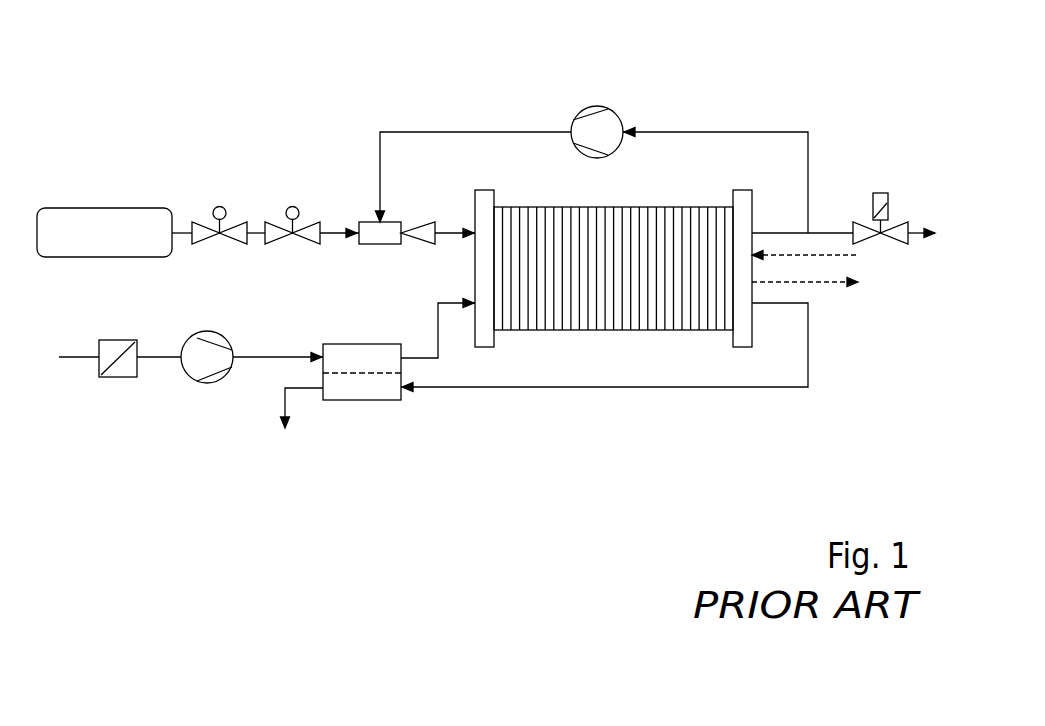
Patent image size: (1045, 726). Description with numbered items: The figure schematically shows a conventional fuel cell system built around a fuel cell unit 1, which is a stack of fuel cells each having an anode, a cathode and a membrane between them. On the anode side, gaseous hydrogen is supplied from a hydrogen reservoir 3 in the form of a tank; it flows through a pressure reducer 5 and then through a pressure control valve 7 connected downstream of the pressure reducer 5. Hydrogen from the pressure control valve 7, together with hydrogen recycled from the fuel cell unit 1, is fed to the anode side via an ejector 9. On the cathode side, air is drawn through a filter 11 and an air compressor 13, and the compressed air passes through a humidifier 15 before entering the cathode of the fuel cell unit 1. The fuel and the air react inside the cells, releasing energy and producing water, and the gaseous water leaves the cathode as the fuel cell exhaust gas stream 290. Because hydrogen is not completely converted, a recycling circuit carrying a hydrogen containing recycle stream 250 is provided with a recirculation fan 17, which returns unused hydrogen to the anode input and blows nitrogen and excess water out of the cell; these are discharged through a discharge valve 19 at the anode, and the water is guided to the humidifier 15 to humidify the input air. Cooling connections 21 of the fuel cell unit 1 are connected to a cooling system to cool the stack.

The fuel cell unit 1 is at (503, 207).
The hydrogen reservoir 3 is at (106, 208).
The pressure reducer 5 is at (232, 222).
The pressure control valve 7 is at (307, 222).
The ejector 9 is at (362, 221).
The filter 11 is at (120, 378).
The air compressor 13 is at (214, 383).
The humidifier 15 is at (363, 401).
The recirculation fan 17 is at (587, 107).
The discharge valve 19 is at (900, 222).
The cooling connections 21 is at (815, 265).
The hydrogen containing recycle stream 250 is at (715, 131).
The fuel cell exhaust gas stream 290 is at (655, 388).